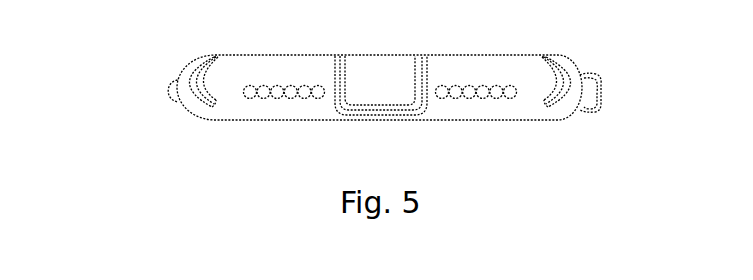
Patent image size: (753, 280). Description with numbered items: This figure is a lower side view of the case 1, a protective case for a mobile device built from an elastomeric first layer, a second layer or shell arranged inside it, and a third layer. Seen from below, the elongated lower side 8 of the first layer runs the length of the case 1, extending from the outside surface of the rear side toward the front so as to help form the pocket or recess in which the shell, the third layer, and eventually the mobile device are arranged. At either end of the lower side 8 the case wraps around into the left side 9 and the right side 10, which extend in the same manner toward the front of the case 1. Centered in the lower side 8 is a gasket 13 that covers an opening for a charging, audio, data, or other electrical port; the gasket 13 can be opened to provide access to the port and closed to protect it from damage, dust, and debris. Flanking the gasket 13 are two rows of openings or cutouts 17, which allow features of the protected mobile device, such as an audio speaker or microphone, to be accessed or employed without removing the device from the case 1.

The case 1 is at (357, 109).
The lower side 8 is at (442, 55).
The left side 9 is at (576, 65).
The right side 10 is at (178, 75).
The gasket 13 is at (377, 75).
The openings or cutouts 17 is at (461, 95).